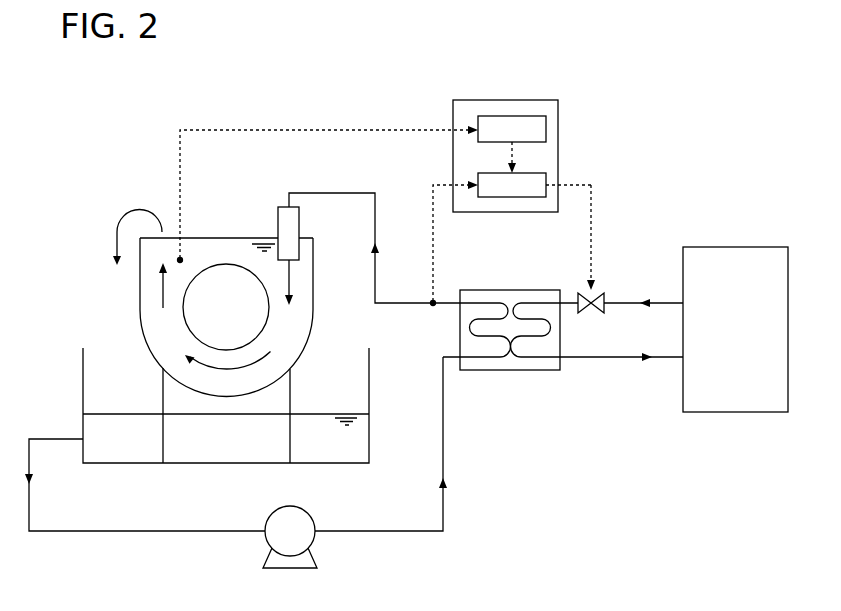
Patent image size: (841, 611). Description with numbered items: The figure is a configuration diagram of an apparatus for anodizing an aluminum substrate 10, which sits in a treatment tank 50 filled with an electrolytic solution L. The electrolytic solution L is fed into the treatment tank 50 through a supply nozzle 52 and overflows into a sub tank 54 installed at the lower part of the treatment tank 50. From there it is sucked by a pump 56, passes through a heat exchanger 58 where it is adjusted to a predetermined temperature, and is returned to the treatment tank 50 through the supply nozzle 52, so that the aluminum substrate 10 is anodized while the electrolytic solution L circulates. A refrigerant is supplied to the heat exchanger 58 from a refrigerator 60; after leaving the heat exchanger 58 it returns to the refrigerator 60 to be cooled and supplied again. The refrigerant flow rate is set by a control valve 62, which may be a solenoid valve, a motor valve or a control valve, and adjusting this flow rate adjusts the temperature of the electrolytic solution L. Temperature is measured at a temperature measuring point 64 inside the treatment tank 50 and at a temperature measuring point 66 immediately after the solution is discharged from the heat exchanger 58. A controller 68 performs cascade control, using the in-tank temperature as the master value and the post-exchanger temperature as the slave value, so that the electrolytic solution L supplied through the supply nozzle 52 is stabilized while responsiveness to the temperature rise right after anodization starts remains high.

The aluminum substrate 10 is at (268, 322).
The treatment tank 50 is at (140, 312).
The supply nozzle 52 is at (284, 207).
The sub tank 54 is at (81, 363).
The pump 56 is at (305, 540).
The heat exchanger 58 is at (540, 371).
The refrigerator 60 is at (683, 393).
The control valve 62 is at (591, 290).
The temperature measuring point 64 is at (183, 257).
The temperature measuring point 66 is at (433, 303).
The controller 68 is at (558, 118).
The electrolytic solution L is at (302, 306).